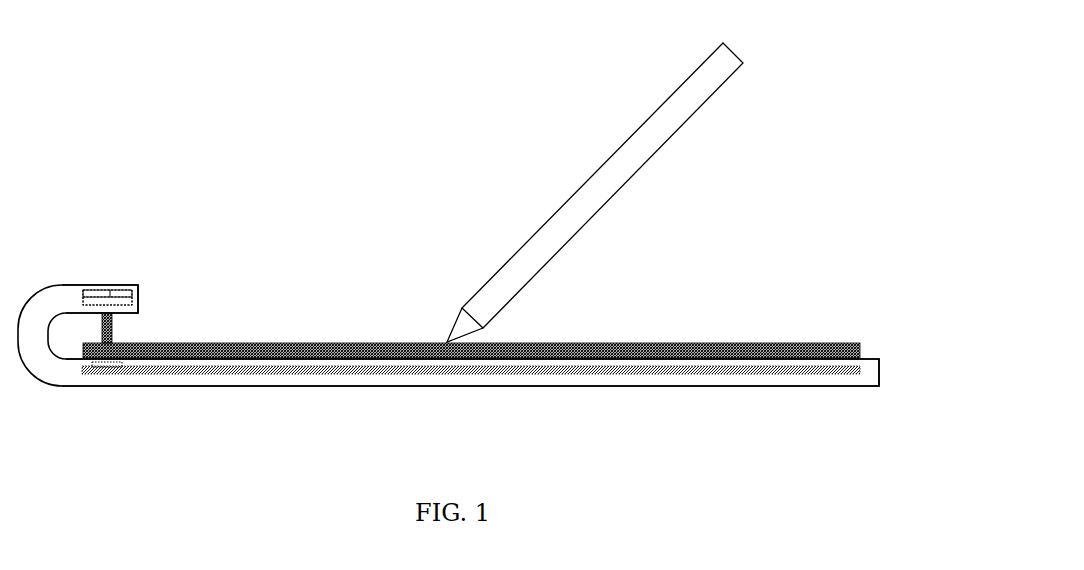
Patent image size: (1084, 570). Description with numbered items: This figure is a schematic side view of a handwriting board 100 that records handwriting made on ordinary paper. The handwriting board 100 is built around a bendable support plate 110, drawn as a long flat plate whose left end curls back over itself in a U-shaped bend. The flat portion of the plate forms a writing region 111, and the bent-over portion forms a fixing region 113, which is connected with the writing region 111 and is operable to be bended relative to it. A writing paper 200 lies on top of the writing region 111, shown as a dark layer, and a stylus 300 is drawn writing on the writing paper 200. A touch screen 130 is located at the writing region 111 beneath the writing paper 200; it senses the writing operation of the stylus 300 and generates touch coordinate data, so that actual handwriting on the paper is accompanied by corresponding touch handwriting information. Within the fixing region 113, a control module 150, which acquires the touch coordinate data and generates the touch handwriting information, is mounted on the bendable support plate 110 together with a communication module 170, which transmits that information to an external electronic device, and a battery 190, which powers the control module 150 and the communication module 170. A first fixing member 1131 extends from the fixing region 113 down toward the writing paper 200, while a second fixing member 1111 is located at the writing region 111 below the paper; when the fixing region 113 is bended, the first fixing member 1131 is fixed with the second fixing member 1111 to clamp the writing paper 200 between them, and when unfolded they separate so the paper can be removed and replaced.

The handwriting board 100 is at (340, 236).
The bendable support plate 110 is at (65, 386).
The writing region 111 is at (562, 386).
The second fixing member 1111 is at (110, 370).
The fixing region 113 is at (128, 283).
The first fixing member 1131 is at (112, 332).
The touch screen 130 is at (692, 376).
The control module 150 is at (92, 284).
The communication module 170 is at (132, 293).
The battery 190 is at (132, 302).
The writing paper 200 is at (683, 343).
The stylus 300 is at (592, 175).